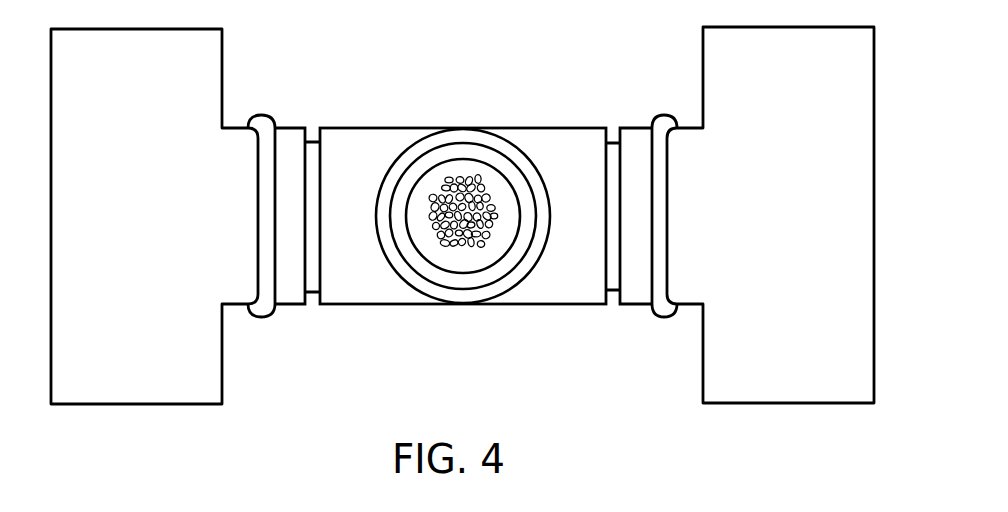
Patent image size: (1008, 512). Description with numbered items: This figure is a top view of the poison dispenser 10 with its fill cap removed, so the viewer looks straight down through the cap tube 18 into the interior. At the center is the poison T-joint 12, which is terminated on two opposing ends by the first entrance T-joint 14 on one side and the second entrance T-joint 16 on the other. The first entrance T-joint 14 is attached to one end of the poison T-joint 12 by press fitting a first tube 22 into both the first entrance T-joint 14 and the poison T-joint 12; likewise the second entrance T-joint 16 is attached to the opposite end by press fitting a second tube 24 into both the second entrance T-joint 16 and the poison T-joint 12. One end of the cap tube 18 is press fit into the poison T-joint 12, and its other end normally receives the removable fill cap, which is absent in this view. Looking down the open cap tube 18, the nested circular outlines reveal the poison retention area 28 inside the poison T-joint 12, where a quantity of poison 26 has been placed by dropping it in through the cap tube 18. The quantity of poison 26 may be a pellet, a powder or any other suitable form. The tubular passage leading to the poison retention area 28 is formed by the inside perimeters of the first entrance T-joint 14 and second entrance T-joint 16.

The poison dispenser 10 is at (325, 67).
The poison T-joint 12 is at (357, 292).
The first entrance T-joint 14 is at (126, 388).
The second entrance T-joint 16 is at (797, 388).
The cap tube 18 is at (520, 250).
The first tube 22 is at (312, 300).
The second tube 24 is at (613, 148).
The quantity of poison 26 is at (467, 247).
The poison retention area 28 is at (423, 192).